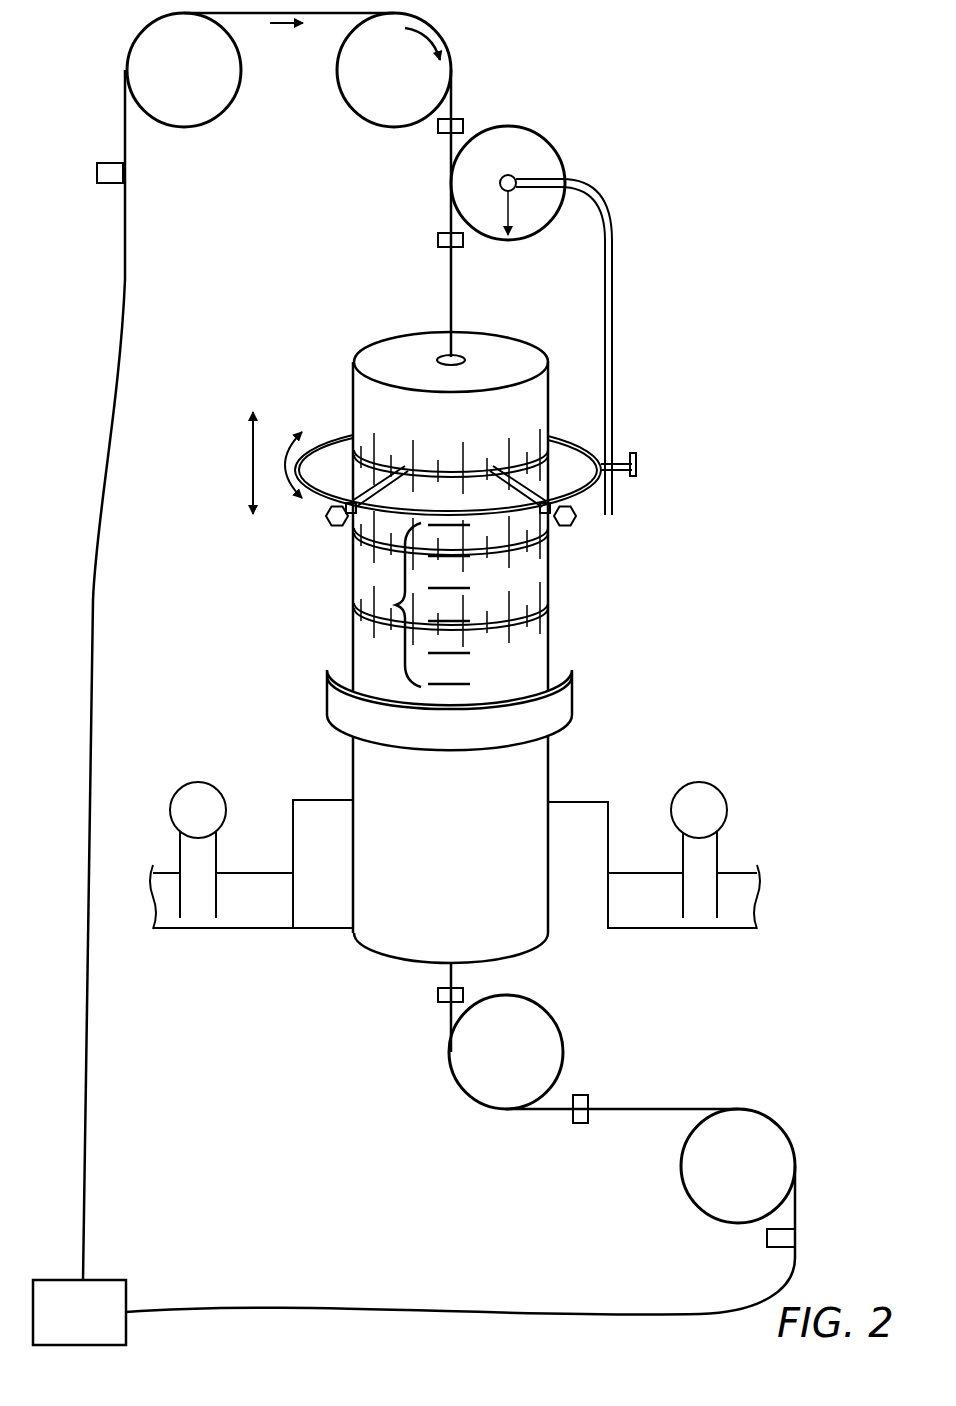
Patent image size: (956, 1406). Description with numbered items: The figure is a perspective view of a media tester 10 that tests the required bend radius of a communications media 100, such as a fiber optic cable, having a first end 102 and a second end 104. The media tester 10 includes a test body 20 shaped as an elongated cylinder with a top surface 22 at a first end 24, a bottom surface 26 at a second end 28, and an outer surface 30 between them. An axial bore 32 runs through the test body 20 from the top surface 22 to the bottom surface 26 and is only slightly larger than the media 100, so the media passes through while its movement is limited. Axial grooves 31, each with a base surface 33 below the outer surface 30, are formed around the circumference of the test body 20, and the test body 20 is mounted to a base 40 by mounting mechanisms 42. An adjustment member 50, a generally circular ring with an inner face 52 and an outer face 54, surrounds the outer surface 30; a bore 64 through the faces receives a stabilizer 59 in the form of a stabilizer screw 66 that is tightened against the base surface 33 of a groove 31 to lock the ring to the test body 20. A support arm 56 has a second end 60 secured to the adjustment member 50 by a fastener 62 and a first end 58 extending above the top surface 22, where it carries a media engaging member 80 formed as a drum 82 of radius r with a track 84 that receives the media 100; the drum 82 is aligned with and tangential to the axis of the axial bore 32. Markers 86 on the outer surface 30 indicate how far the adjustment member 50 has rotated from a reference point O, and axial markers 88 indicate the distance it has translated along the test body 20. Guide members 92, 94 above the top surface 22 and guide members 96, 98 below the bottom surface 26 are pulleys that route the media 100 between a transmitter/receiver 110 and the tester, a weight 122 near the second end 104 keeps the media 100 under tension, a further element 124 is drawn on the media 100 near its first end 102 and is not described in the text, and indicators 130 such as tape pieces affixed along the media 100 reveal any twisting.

The media tester 10 is at (574, 117).
The test body 20 is at (557, 575).
The top surface 22 is at (385, 345).
The first end 24 is at (444, 630).
The bottom surface 26 is at (525, 965).
The second end 28 is at (335, 948).
The outer surface 30 is at (550, 652).
The axial groove 31 is at (366, 462).
The axial bore 32 is at (440, 275).
The base surface 33 is at (503, 612).
The base 40 is at (470, 812).
The mounting mechanism 42 is at (200, 782).
The adjustment member 50 is at (464, 454).
The inner face 52 is at (583, 490).
The outer face 54 is at (320, 512).
The support arm 56 is at (613, 362).
The first end 58 is at (536, 187).
The stabilizer 59 is at (340, 518).
The second end 60 is at (605, 505).
The fastener 62 is at (638, 466).
The bore 64 is at (548, 503).
The stabilizer screw 66 is at (372, 542).
The media engaging member 80 is at (572, 274).
The drum 82 is at (509, 138).
The track 84 is at (566, 178).
The markers 86 is at (400, 560).
The axial markers 88 is at (372, 626).
The guide member 92 is at (230, 72).
The guide member 94 is at (432, 72).
The guide member 96 is at (553, 1050).
The guide member 98 is at (692, 1170).
The media 100 is at (447, 262).
The first end 102 is at (125, 197).
The second end 104 is at (797, 1205).
The transmitter/receiver 110 is at (126, 1292).
The weight 122 is at (767, 1240).
The sensor 124 is at (97, 173).
The indicators 130 is at (438, 127).
The reference point O is at (590, 442).